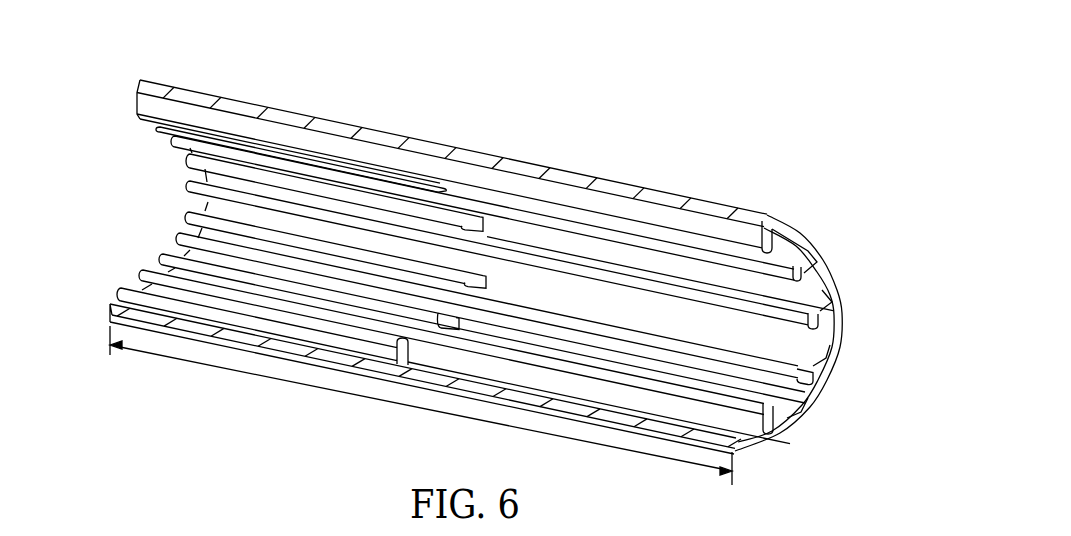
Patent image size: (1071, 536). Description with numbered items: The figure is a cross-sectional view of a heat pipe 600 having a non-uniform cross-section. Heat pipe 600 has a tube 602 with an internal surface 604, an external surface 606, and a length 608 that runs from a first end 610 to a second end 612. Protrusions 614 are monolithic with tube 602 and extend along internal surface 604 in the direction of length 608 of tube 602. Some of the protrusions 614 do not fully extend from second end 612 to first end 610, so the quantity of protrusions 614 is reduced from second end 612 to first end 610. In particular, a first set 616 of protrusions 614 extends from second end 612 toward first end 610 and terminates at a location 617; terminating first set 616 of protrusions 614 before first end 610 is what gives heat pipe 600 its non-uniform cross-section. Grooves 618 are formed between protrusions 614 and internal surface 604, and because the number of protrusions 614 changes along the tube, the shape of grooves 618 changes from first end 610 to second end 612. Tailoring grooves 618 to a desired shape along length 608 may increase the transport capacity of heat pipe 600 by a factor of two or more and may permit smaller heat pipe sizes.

The heat pipe 600 is at (756, 68).
The tube 602 is at (672, 199).
The internal surface 604 is at (603, 302).
The external surface 606 is at (533, 160).
The length 608 is at (387, 398).
The first end 610 is at (812, 434).
The second end 612 is at (134, 84).
The protrusions 614 is at (810, 361).
The first set of protrusions 616 is at (180, 210).
The location 617 is at (441, 140).
The grooves 618 is at (805, 292).